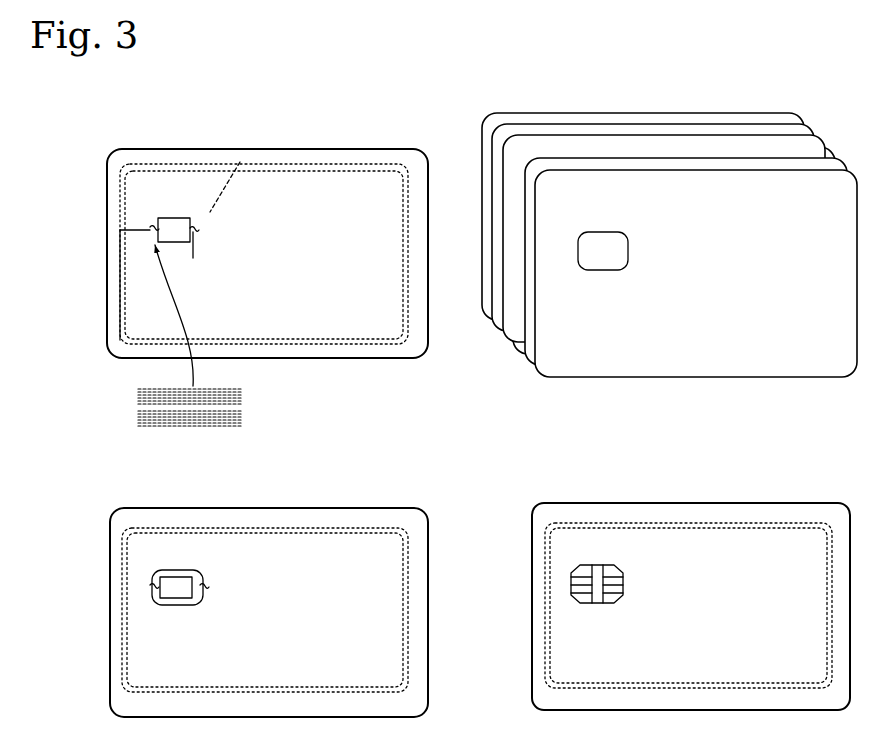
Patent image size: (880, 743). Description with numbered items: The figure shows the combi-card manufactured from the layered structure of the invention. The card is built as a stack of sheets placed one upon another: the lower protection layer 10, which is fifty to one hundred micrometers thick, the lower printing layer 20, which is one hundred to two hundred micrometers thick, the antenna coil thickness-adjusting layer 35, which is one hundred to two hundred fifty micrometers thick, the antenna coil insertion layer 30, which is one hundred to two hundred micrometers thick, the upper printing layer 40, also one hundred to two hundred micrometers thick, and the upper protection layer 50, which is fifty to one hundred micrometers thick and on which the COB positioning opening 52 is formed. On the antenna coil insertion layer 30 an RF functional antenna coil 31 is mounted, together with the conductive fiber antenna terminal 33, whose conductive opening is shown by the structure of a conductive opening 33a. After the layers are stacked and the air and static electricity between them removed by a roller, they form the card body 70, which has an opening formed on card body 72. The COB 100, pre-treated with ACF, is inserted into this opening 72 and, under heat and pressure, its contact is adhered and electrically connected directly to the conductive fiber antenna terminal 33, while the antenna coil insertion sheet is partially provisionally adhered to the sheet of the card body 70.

The lower protection layer 10 is at (485, 241).
The lower printing layer 20 is at (496, 266).
The antenna coil insertion layer 30 is at (221, 159).
The antenna coil 31 is at (318, 155).
The antenna terminal 33 is at (147, 229).
The structure of a conductive opening 33a is at (190, 357).
The thickness-adjusting layer 35 is at (507, 290).
The upper printing layer 40 is at (529, 336).
The upper protection layer 50 is at (555, 359).
The COB positioning opening formed on upper protection layer 52 is at (606, 249).
The card body 70 is at (254, 540).
The opening formed on card body 72 is at (176, 593).
The COB (Chip On Board) 100 is at (568, 585).